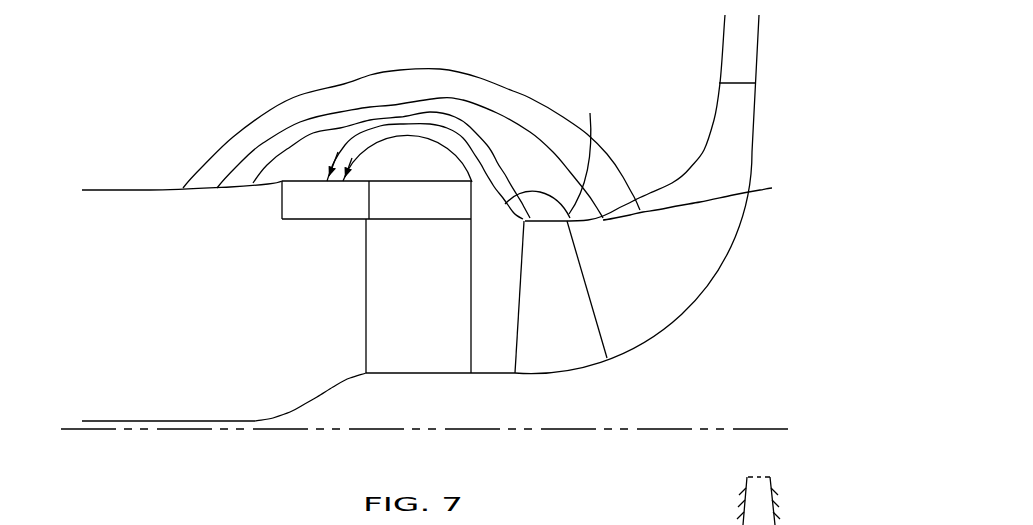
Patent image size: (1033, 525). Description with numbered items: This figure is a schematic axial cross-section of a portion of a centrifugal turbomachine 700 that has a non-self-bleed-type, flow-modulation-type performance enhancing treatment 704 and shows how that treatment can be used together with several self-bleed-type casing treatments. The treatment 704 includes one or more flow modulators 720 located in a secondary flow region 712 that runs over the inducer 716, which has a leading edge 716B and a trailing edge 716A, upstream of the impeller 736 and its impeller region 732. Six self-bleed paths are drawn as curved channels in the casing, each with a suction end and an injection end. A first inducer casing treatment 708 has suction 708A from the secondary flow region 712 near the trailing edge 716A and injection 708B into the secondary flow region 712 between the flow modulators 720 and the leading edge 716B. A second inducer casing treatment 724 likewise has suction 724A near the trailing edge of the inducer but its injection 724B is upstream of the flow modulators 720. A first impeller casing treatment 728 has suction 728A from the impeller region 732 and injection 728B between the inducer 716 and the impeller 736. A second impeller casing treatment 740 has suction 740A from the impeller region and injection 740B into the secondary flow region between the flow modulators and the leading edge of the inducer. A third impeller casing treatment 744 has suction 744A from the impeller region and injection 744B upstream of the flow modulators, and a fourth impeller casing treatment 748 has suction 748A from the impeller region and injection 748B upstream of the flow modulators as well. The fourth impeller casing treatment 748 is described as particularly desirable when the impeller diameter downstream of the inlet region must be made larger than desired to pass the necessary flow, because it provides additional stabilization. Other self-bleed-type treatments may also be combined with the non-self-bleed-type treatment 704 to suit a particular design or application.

The centrifugal turbomachine 700 is at (444, 269).
The non-self-bleed-type performance enhancing treatment 704 is at (291, 231).
The first inducer casing treatment 708 is at (358, 177).
The suction 708A is at (470, 189).
The injection 708B is at (369, 184).
The secondary flow region 712 is at (431, 211).
The inducer 716 is at (364, 357).
The trailing edge 716A is at (478, 334).
The leading edge 716B is at (363, 279).
The flow modulator 720 is at (279, 211).
The second inducer casing treatment 724 is at (337, 137).
The suction 724A is at (484, 202).
The injection 724B is at (254, 180).
The first impeller casing treatment 728 is at (557, 154).
The suction 728A is at (573, 230).
The injection 728B is at (507, 203).
The impeller region 732 is at (631, 308).
The impeller 736 is at (641, 189).
The second impeller casing treatment 740 is at (423, 98).
The suction 740A is at (600, 223).
The injection 740B is at (317, 175).
The third impeller casing treatment 744 is at (375, 71).
The suction 744A is at (637, 213).
The injection 744B is at (178, 184).
The fourth impeller casing treatment 748 is at (300, 122).
The suction 748A is at (531, 229).
The injection 748B is at (212, 176).